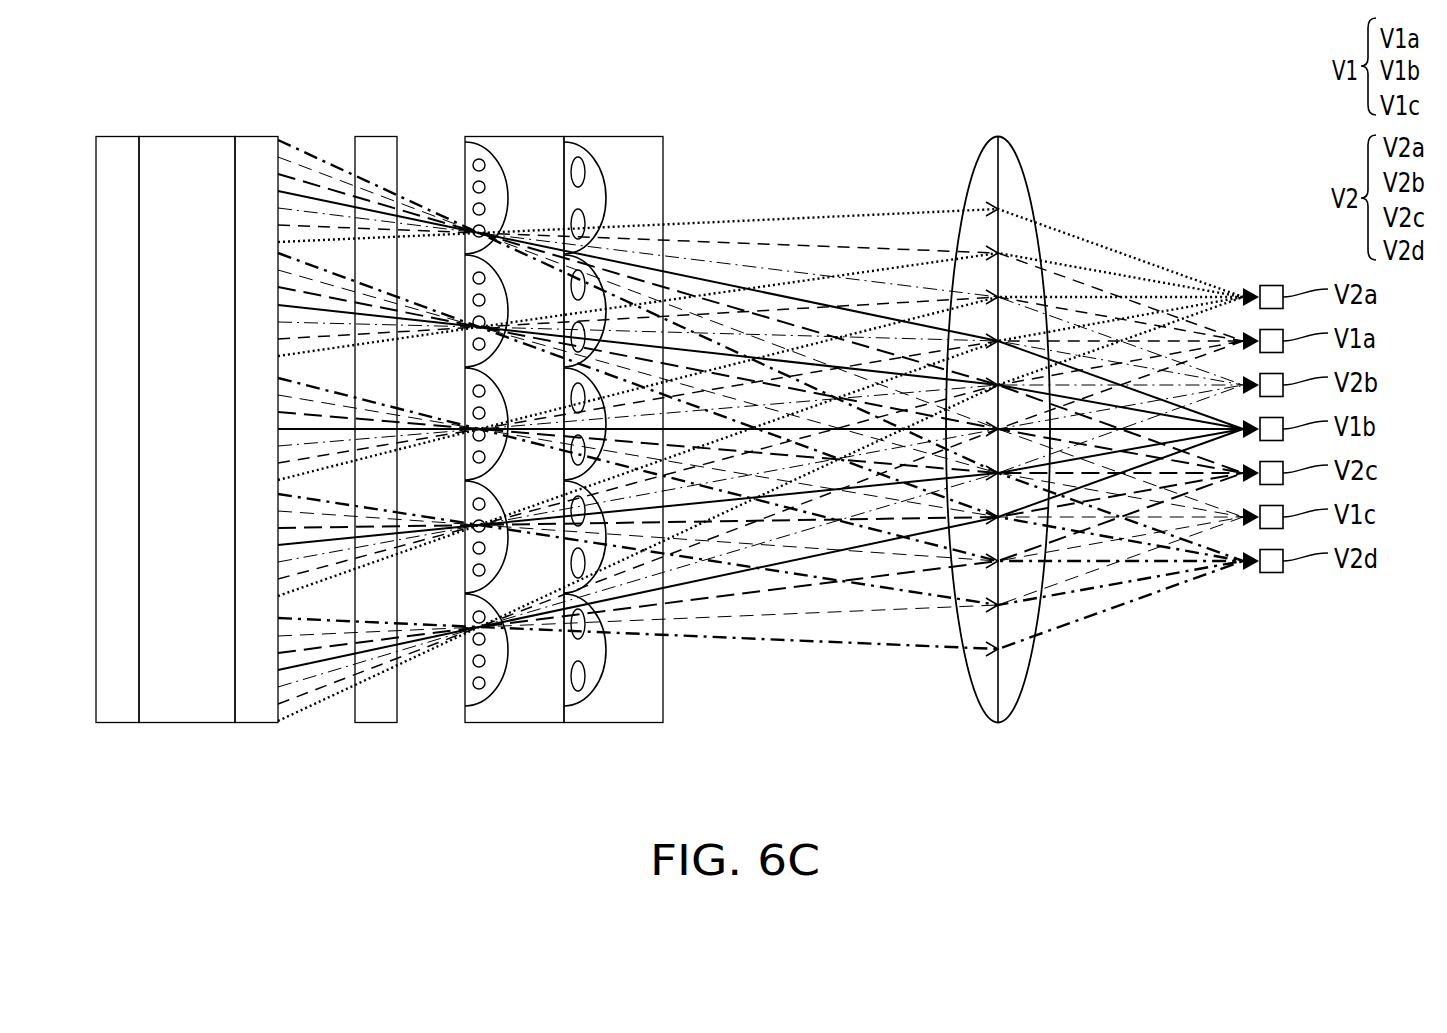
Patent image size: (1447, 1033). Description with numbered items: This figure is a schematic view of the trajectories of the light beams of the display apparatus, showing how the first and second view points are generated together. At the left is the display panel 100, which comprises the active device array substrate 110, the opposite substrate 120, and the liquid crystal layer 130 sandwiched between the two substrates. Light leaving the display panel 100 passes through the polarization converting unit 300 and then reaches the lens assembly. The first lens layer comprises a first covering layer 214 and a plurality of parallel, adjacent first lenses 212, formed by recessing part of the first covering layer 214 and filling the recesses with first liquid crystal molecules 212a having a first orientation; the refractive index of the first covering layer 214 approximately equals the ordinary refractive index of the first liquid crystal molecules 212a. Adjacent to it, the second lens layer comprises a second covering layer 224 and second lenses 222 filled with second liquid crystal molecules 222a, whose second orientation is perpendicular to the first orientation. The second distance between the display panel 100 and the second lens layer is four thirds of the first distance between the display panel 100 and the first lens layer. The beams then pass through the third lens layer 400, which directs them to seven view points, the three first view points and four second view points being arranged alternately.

The display panel 100 is at (187, 429).
The active device array substrate 110 is at (117, 150).
The liquid crystal layer 130 is at (188, 150).
The opposite substrate 120 is at (256, 150).
The polarization converting unit 300 is at (379, 152).
The first lenses 212 is at (494, 688).
The first liquid crystal molecules 212a is at (491, 166).
The first covering layer 214 is at (531, 683).
The second lenses 222 is at (590, 688).
The second liquid crystal molecules 222a is at (590, 175).
The second covering layer 224 is at (636, 683).
The third lens layer 400 is at (1016, 178).